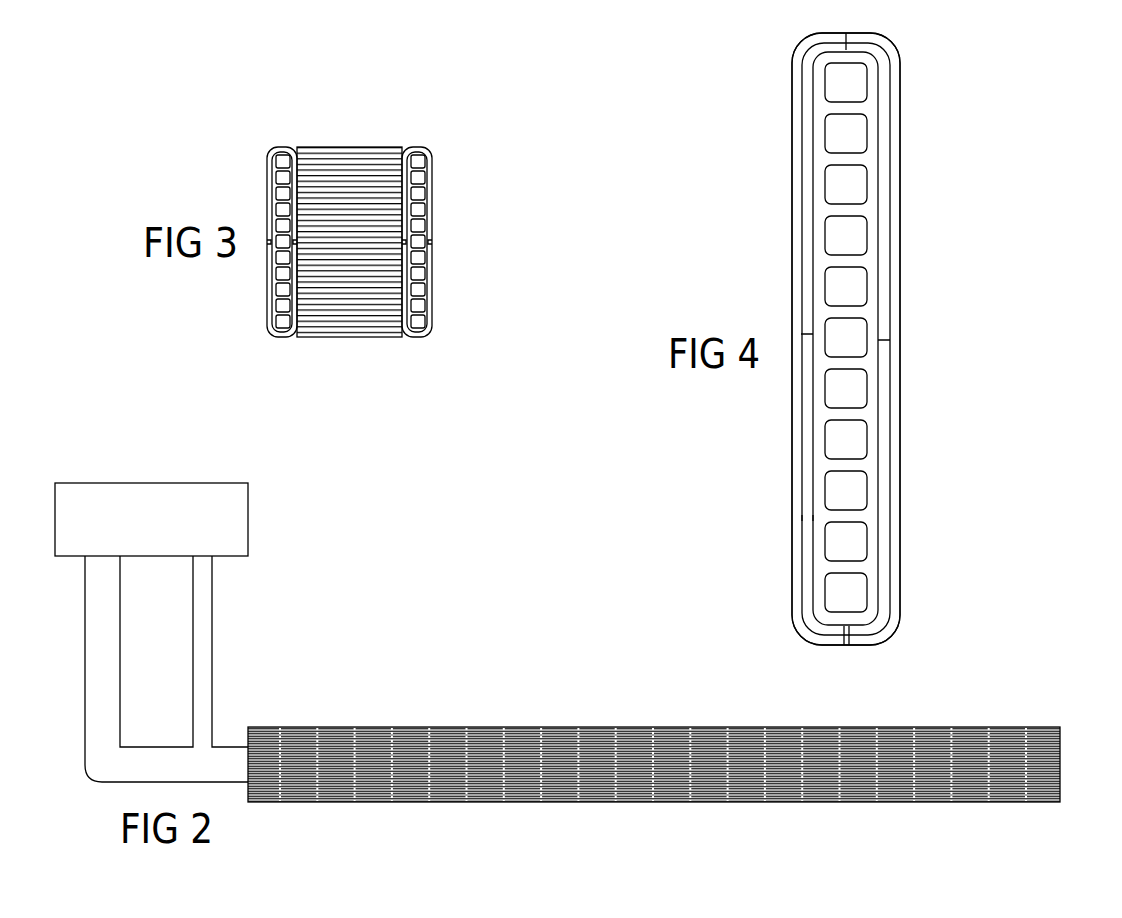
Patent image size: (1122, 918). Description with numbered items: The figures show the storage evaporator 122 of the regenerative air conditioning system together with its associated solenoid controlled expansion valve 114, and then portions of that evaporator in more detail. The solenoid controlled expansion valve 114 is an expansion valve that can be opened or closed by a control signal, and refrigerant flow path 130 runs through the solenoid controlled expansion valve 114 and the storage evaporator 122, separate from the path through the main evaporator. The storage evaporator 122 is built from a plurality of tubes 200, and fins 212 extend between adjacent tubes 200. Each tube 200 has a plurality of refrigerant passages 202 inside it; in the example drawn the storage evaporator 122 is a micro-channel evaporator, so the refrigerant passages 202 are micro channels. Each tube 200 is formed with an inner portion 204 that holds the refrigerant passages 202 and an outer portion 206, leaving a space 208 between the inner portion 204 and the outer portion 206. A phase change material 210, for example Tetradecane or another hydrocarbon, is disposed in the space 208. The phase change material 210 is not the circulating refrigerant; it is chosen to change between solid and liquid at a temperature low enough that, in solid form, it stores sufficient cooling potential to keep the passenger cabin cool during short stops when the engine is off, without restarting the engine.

In FIG. 2, the solenoid controlled expansion valve 114 is at (248, 520).
In FIG. 3, the storage evaporator 122 is at (467, 163).
In FIG. 2, the storage evaporator 122 is at (584, 664).
In FIG. 2, the refrigerant flow path 130 is at (264, 671).
In FIG. 3, the tube 200 is at (284, 146).
In FIG. 4, the tube 200 is at (904, 78).
In FIG. 2, the tube 200 is at (280, 802).
In FIG. 4, the refrigerant passage 202 is at (846, 83).
In FIG. 4, the inner portion 204 is at (813, 597).
In FIG. 4, the outer portion 206 is at (799, 572).
In FIG. 4, the space 208 is at (836, 518).
In FIG. 4, the phase change material 210 is at (805, 500).
In FIG. 3, the fins 212 is at (353, 343).
In FIG. 2, the fins 212 is at (262, 727).